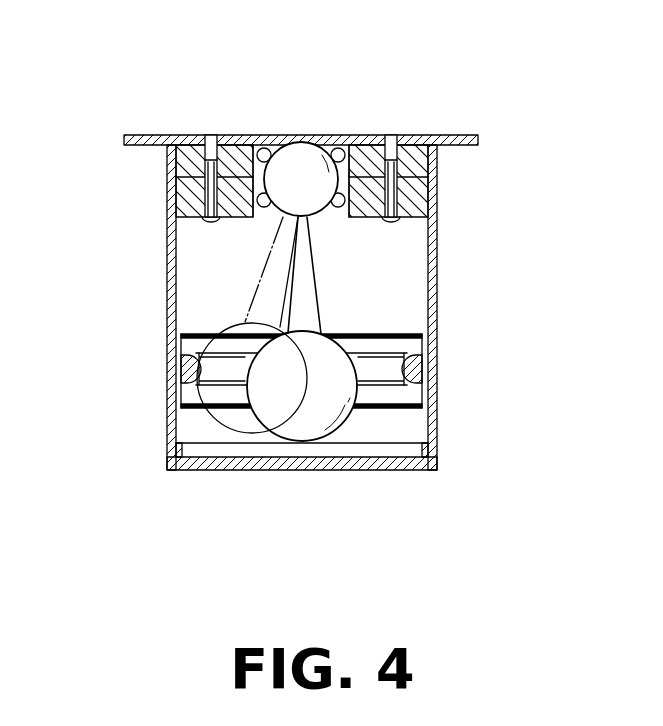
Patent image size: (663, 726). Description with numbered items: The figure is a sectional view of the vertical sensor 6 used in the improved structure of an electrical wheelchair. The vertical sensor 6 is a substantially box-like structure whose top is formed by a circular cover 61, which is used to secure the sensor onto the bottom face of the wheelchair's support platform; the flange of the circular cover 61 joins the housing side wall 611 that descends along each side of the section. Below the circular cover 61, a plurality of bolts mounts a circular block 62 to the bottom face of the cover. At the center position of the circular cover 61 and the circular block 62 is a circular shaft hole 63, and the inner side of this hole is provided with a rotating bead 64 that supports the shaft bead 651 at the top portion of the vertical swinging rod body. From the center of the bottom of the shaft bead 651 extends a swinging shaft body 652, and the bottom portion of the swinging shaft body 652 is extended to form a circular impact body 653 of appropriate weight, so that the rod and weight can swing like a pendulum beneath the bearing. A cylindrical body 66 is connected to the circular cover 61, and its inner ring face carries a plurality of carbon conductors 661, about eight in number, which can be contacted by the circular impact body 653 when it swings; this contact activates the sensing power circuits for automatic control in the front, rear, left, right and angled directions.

The vertical sensor 6 is at (135, 80).
The circular cover 61 is at (414, 148).
The housing side wall 611 is at (174, 197).
The circular block 62 is at (421, 200).
The circular shaft hole 63 is at (274, 148).
The rotating bead 64 is at (250, 138).
The shaft bead 651 is at (309, 160).
The swinging shaft body 652 is at (308, 252).
The circular impact body 653 is at (302, 427).
The cylindrical body 66 is at (437, 423).
The carbon conductor 661 is at (174, 369).